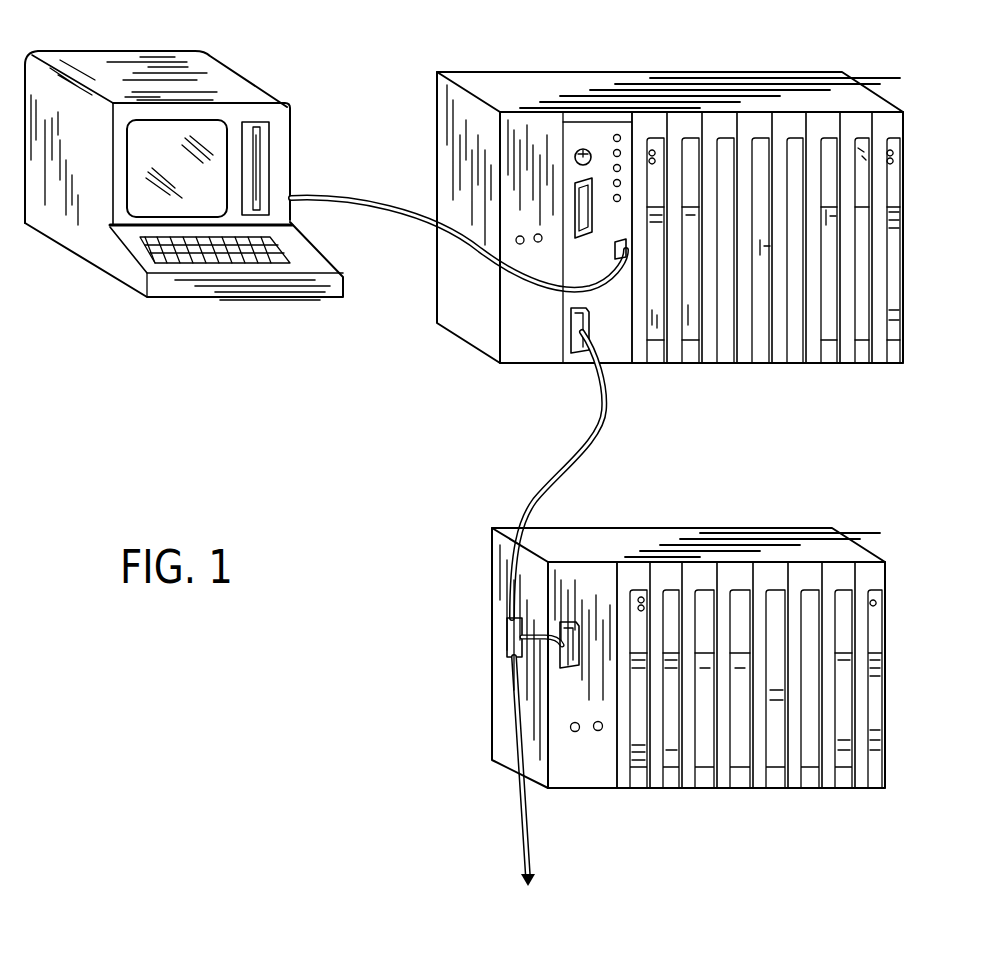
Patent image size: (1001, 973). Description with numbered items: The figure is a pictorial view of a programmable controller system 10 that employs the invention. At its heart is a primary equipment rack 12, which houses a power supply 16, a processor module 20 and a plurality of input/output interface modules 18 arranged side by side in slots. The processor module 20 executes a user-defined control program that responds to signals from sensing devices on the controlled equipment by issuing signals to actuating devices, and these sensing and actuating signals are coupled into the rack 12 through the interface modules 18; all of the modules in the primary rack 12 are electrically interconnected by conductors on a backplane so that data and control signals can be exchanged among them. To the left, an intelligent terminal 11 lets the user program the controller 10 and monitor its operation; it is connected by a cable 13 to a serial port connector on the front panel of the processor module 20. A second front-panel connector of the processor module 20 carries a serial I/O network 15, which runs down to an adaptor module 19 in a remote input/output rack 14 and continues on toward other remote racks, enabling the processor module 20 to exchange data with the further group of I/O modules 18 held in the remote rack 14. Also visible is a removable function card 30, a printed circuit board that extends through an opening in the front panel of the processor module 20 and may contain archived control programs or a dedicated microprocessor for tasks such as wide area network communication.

The programmable controller system 10 is at (398, 370).
The intelligent terminal 11 is at (300, 157).
The primary equipment rack 12 is at (641, 62).
The cable 13 is at (421, 227).
The remote input/output rack 14 is at (708, 517).
The serial I/O network 15 is at (572, 453).
The power supply 16 is at (538, 352).
The input/output interface modules 18 is at (648, 363).
The adaptor module 19 is at (577, 783).
The processor module 20 is at (620, 353).
The function card 30 is at (597, 259).